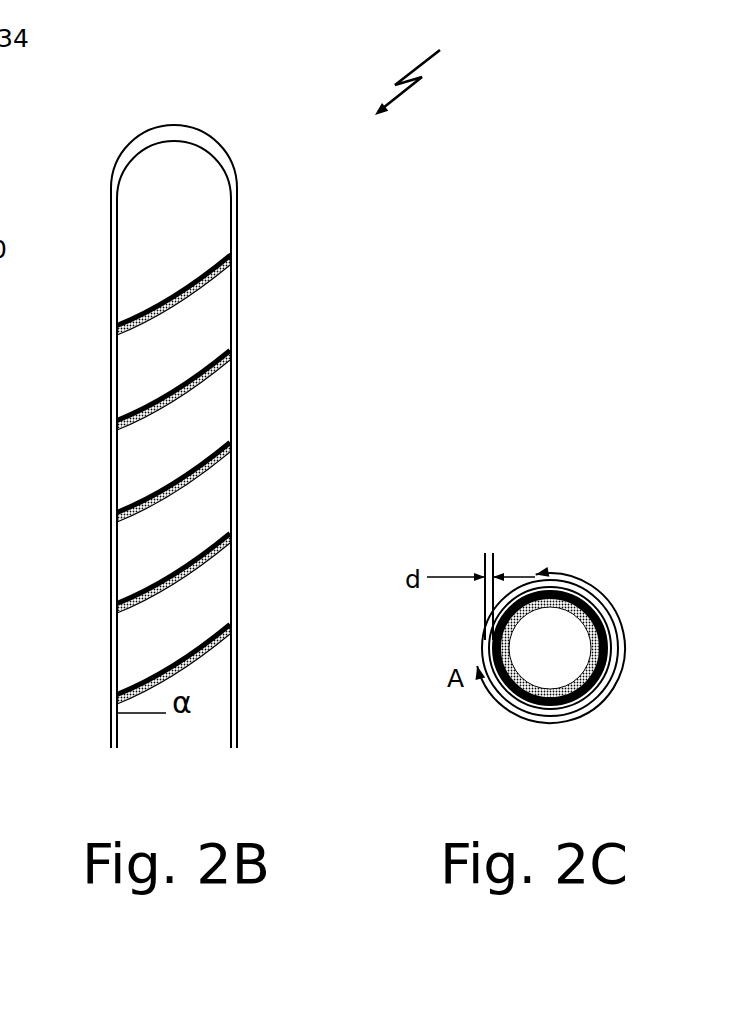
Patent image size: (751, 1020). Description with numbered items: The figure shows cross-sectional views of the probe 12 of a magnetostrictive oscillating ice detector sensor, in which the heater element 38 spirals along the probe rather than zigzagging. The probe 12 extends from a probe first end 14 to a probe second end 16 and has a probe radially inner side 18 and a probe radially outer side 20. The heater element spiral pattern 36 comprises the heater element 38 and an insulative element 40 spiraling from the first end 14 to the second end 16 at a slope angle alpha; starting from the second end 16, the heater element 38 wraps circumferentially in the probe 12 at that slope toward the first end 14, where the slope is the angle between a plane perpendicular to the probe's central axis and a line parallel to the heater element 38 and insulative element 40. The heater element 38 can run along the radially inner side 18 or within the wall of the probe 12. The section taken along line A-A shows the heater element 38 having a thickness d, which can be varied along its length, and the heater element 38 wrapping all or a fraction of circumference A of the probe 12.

In FIG. 2B, the probe 12 is at (114, 287).
In FIG. 2C, the probe 12 is at (482, 645).
In FIG. 2B, the probe first end 14 is at (145, 143).
In FIG. 2B, the probe second end 16 is at (114, 744).
In FIG. 2B, the probe radially inner side 18 is at (119, 188).
In FIG. 2B, the probe radially outer side 20 is at (234, 251).
In FIG. 2B, the heater element spiral pattern 36 is at (424, 69).
In FIG. 2B, the heater element 38 is at (176, 316).
In FIG. 2C, the heater element 38 is at (603, 628).
In FIG. 2B, the insulative element 40 is at (183, 385).
In FIG. 2C, the insulative element 40 is at (587, 598).